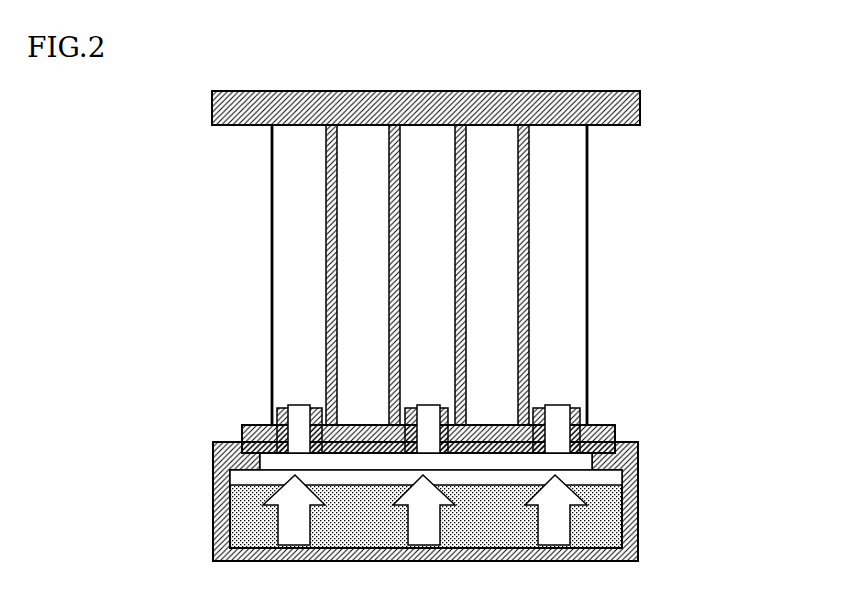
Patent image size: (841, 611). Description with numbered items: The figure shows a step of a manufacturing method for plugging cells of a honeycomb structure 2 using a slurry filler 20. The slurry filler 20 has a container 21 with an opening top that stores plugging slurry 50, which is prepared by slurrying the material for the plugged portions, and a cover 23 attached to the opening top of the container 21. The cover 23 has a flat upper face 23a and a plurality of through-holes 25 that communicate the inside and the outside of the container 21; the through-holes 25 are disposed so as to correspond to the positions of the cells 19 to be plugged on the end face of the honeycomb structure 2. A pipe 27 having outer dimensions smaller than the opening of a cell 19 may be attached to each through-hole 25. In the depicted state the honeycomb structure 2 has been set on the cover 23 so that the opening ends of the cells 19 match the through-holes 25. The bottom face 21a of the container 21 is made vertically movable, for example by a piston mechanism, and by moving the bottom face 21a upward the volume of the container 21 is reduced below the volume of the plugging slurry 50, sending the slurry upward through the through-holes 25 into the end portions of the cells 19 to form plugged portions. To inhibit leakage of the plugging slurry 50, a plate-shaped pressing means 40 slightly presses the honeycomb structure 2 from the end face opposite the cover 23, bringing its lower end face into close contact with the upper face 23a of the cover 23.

The plate-shaped pressing means 40 is at (605, 92).
The honeycomb structure 2 is at (587, 303).
The cells to be plugged 19 is at (422, 378).
The through-holes 25 is at (295, 420).
The pipe 27 is at (272, 416).
The cover 23 is at (253, 424).
The upper face 23a is at (600, 425).
The slurry filler 20 is at (654, 454).
The container 21 is at (213, 503).
The bottom face 21a is at (594, 546).
The plugging slurry 50 is at (240, 527).